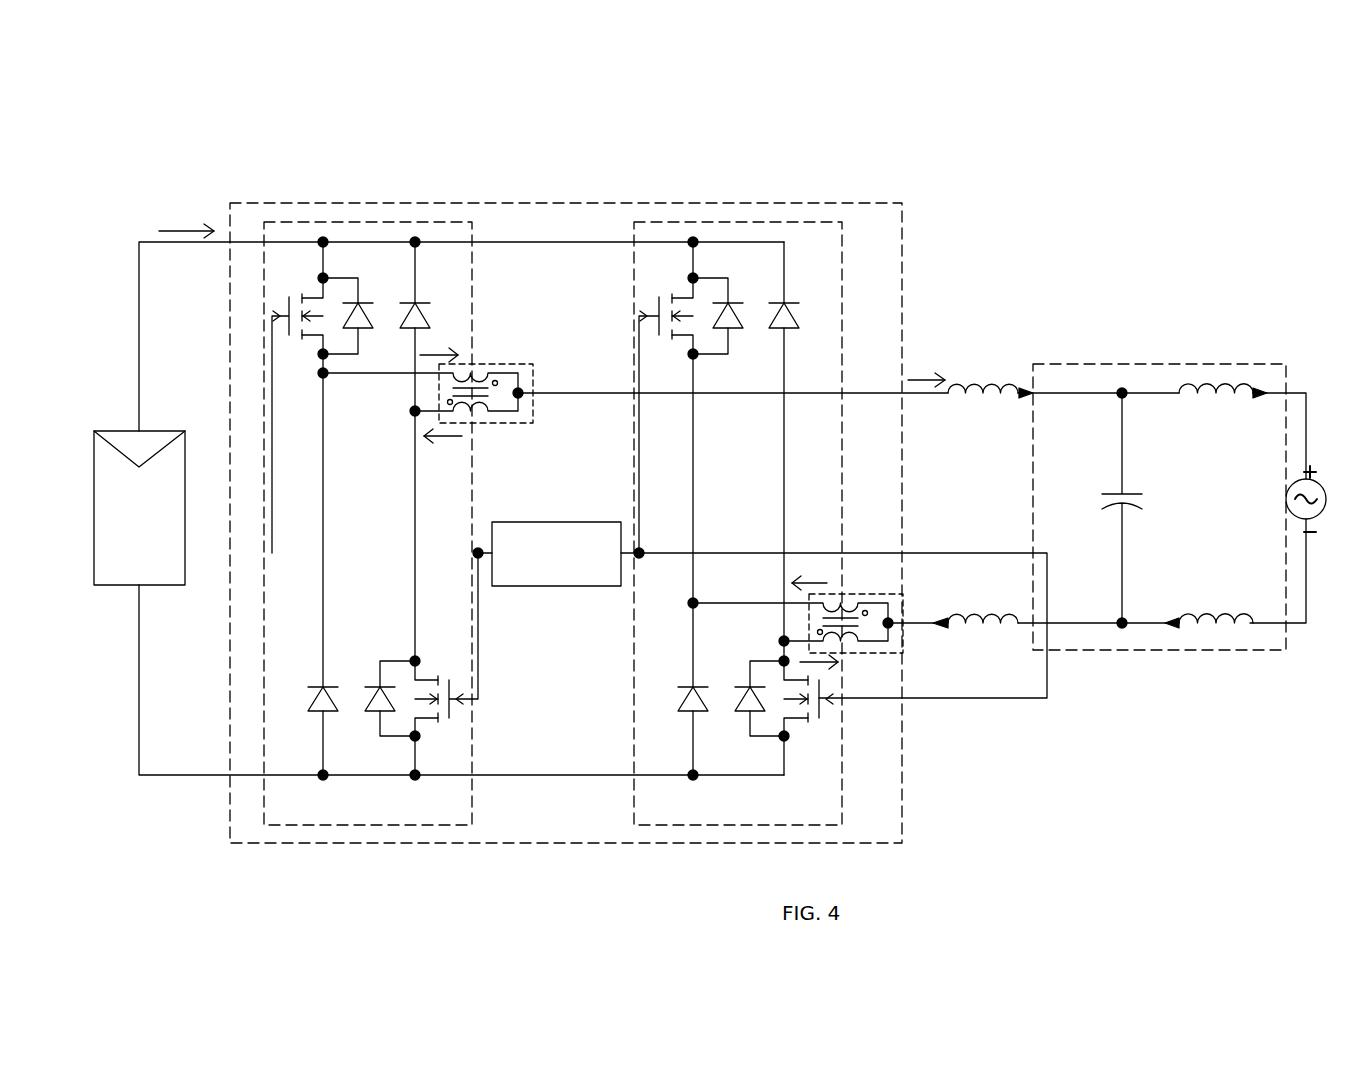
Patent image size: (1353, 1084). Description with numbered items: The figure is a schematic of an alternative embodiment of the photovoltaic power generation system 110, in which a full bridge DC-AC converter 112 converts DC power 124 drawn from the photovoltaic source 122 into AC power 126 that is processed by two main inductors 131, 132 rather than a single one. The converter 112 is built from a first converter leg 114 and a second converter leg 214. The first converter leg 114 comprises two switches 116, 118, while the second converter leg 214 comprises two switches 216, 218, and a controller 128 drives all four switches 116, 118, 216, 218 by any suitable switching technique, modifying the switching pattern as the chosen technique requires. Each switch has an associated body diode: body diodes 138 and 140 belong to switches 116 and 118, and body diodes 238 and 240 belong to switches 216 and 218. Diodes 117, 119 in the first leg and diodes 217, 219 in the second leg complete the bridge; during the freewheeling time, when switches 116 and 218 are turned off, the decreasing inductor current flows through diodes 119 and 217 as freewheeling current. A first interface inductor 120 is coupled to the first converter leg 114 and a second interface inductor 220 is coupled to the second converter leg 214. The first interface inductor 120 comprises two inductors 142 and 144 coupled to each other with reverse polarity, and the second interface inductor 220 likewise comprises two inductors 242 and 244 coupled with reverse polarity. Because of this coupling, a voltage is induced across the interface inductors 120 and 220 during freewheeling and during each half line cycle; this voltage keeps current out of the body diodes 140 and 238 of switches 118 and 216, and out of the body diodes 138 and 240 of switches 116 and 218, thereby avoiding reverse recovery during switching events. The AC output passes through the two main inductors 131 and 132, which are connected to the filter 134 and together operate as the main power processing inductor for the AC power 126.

The photovoltaic power generation system 110 is at (1215, 147).
The full bridge DC-AC converter 112 is at (262, 203).
The first converter leg 114 is at (370, 222).
The switch 116 is at (302, 297).
The diode 117 is at (427, 304).
The switch 118 is at (432, 679).
The diode 119 is at (313, 686).
The first interface inductor 120 is at (454, 389).
The DC power source (photovoltaic panel) 122 is at (165, 430).
The DC power 124 is at (170, 228).
The AC power 126 is at (916, 377).
The controller 128 is at (556, 522).
The main inductor 131 is at (993, 385).
The main inductor 132 is at (951, 615).
The filter 134 is at (1120, 363).
The body diode 138 is at (370, 304).
The body diode 140 is at (372, 686).
The inductor 142 is at (478, 378).
The inductor 144 is at (486, 417).
The second converter leg 214 is at (740, 222).
The switch 216 is at (672, 297).
The diode 217 is at (794, 304).
The switch 218 is at (822, 720).
The diode 219 is at (683, 686).
The second interface inductor 220 is at (836, 626).
The body diode 238 is at (740, 304).
The body diode 240 is at (742, 686).
The inductor 242 is at (850, 610).
The inductor 244 is at (857, 650).